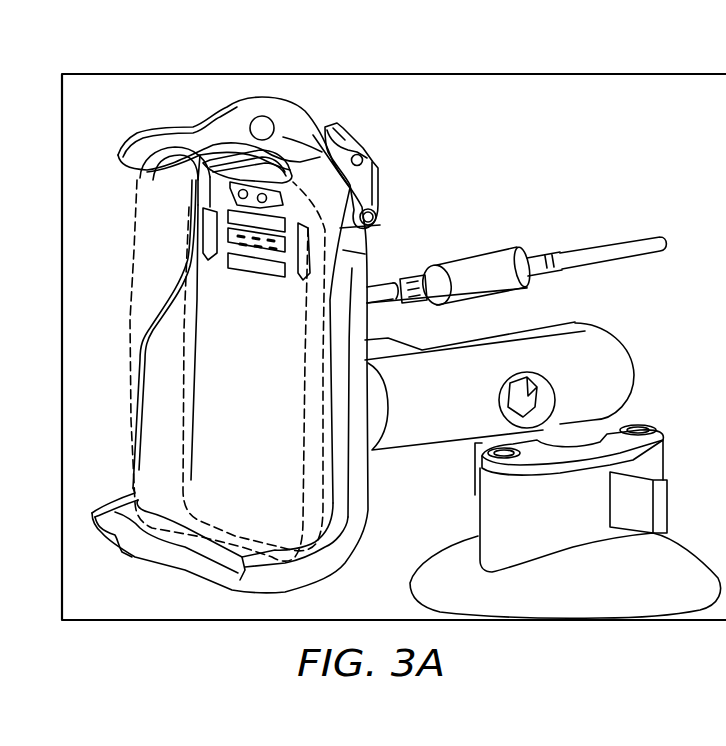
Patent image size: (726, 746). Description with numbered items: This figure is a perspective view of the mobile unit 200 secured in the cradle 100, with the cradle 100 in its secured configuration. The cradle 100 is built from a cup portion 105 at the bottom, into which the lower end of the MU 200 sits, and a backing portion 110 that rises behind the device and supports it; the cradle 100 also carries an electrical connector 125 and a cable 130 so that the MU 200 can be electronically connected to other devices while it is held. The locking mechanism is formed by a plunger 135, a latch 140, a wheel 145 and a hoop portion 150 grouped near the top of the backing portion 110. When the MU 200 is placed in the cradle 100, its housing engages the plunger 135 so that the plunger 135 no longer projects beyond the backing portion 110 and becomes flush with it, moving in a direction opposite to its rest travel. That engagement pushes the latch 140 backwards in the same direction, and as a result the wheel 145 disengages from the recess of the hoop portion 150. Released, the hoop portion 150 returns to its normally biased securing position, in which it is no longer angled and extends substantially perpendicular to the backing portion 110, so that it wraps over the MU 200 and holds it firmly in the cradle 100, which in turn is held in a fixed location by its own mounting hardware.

The cradle 100 is at (133, 93).
The cup portion 105 is at (167, 556).
The backing portion 110 is at (227, 277).
The electrical connector 125 is at (227, 232).
The cable 130 is at (410, 278).
The plunger 135 is at (226, 183).
The latch 140 is at (379, 156).
The wheel 145 is at (334, 148).
The hoop portion 150 is at (285, 108).
The mobile unit (MU) 200 is at (151, 447).